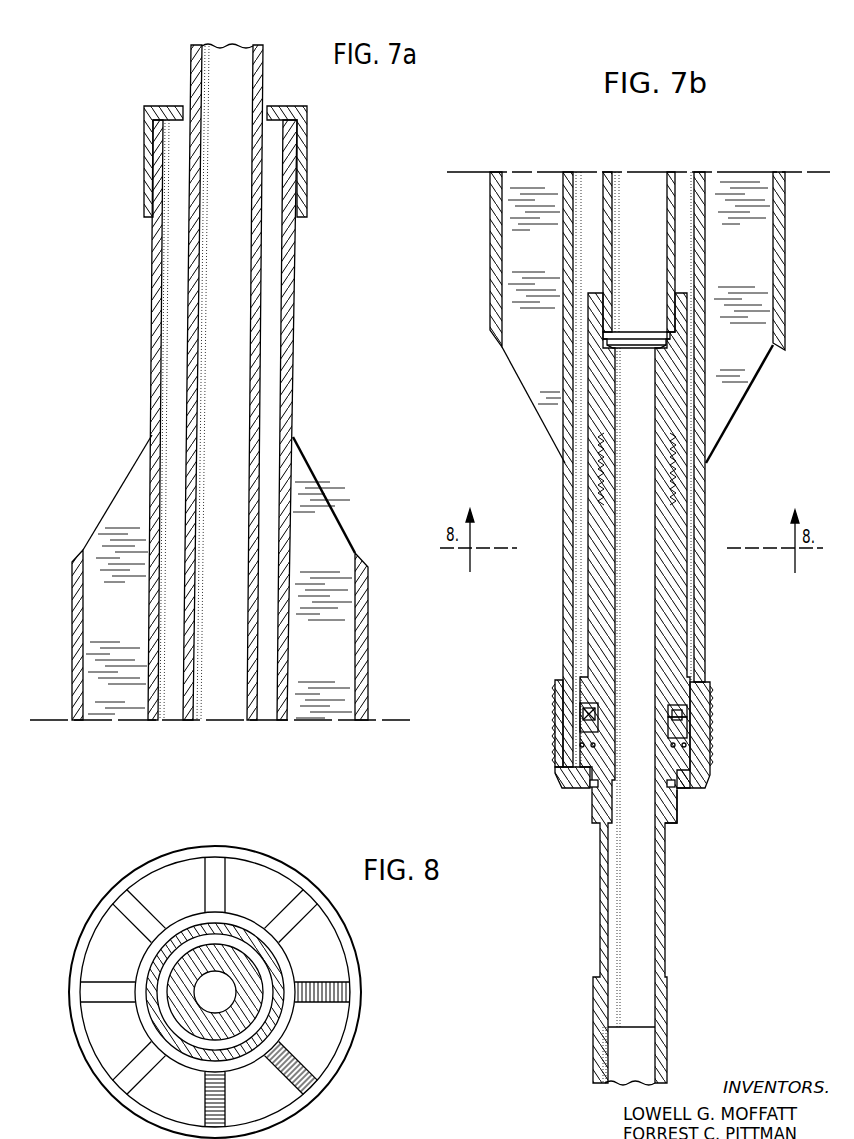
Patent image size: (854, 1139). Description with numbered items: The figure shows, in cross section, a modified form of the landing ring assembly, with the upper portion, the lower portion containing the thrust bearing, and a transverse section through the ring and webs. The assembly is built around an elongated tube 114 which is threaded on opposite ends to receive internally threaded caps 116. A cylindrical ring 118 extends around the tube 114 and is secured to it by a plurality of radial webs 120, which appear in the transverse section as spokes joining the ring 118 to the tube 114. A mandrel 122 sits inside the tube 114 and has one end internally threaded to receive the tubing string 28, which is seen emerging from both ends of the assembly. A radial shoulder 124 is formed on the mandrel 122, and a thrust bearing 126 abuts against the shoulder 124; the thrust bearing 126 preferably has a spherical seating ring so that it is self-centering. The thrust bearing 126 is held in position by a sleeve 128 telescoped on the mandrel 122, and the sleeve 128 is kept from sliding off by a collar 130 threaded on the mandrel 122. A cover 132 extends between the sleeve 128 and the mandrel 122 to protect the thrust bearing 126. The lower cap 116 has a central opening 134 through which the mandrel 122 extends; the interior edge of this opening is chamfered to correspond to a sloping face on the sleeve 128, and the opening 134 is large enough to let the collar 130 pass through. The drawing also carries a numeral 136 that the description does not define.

In FIG. 7a, the tubing string 28 is at (190, 72).
In FIG. 7b, the tubing string 28 is at (650, 194).
In FIG. 7a, the elongated tube 114 is at (296, 278).
In FIG. 7b, the elongated tube 114 is at (572, 615).
In FIG. 8, the elongated tube 114 is at (240, 930).
In FIG. 7a, the internally threaded cap 116 is at (302, 140).
In FIG. 7b, the internally threaded cap 116 is at (558, 772).
In FIG. 7a, the cylindrical ring 118 is at (367, 630).
In FIG. 7b, the cylindrical ring 118 is at (492, 270).
In FIG. 8, the cylindrical ring 118 is at (355, 965).
In FIG. 7a, the radial webs 120 is at (109, 518).
In FIG. 7b, the radial webs 120 is at (528, 388).
In FIG. 8, the radial webs 120 is at (220, 888).
In FIG. 7b, the mandrel 122 is at (668, 625).
In FIG. 8, the mandrel 122 is at (198, 1020).
In FIG. 7b, the radial shoulder 124 is at (677, 700).
In FIG. 7b, the thrust bearing 126 is at (556, 710).
In FIG. 7b, the sleeve 128 is at (678, 763).
In FIG. 7b, the collar 130 is at (672, 807).
In FIG. 7b, the cover 132 is at (683, 720).
In FIG. 7b, the central opening 134 is at (676, 783).
In FIG. 7b, the nut shoulder 136 is at (574, 788).